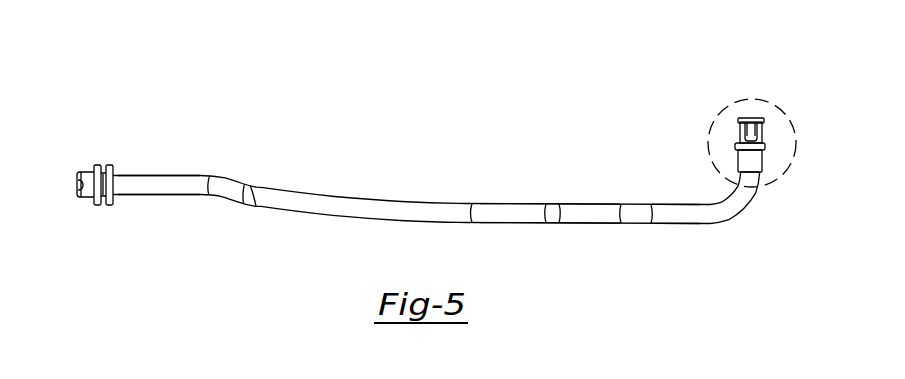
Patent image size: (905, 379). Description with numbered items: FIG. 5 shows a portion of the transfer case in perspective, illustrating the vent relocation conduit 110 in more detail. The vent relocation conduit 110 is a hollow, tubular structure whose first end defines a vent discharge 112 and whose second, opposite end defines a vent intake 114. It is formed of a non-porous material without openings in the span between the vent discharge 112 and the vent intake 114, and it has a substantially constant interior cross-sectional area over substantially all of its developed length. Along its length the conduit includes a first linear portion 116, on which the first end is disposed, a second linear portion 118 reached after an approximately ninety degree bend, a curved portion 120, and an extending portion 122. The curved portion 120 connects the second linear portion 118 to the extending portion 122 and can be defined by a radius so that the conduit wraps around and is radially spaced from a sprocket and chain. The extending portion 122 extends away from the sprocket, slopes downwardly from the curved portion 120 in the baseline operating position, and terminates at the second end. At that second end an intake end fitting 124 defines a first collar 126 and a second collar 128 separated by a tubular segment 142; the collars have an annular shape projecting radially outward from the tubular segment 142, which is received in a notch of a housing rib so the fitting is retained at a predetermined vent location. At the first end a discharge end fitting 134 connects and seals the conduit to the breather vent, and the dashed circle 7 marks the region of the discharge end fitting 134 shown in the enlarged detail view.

The vent relocation conduit 110 is at (238, 108).
The vent discharge 112 is at (745, 158).
The vent intake 114 is at (77, 187).
The first linear portion 116 is at (683, 221).
The second linear portion 118 is at (595, 215).
The curved portion 120 is at (407, 205).
The extending portion 122 is at (165, 189).
The intake end fitting 124 is at (98, 206).
The first collar 126 is at (98, 164).
The second collar 128 is at (109, 164).
The discharge end fitting 134 is at (740, 117).
The tubular segment 142 is at (104, 206).
The detail view circle 7 is at (777, 107).